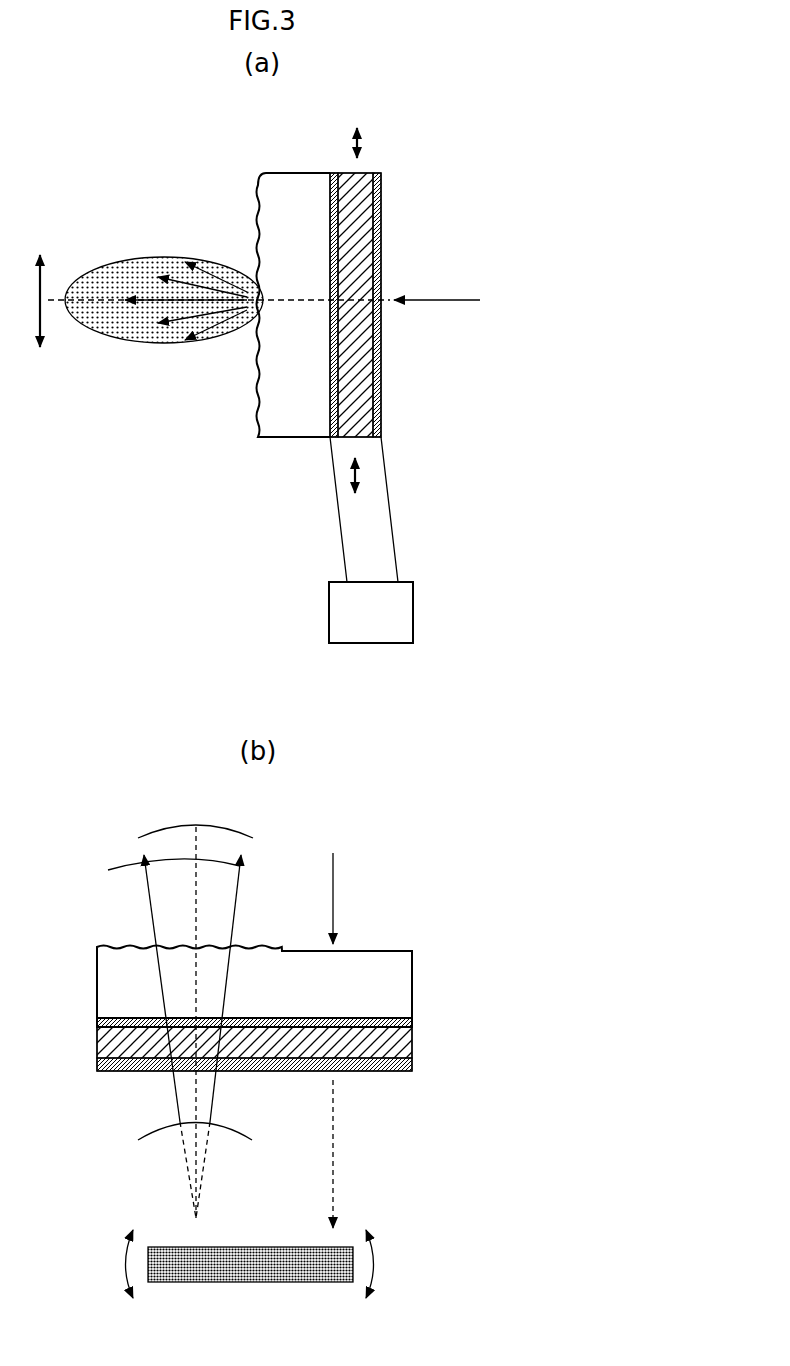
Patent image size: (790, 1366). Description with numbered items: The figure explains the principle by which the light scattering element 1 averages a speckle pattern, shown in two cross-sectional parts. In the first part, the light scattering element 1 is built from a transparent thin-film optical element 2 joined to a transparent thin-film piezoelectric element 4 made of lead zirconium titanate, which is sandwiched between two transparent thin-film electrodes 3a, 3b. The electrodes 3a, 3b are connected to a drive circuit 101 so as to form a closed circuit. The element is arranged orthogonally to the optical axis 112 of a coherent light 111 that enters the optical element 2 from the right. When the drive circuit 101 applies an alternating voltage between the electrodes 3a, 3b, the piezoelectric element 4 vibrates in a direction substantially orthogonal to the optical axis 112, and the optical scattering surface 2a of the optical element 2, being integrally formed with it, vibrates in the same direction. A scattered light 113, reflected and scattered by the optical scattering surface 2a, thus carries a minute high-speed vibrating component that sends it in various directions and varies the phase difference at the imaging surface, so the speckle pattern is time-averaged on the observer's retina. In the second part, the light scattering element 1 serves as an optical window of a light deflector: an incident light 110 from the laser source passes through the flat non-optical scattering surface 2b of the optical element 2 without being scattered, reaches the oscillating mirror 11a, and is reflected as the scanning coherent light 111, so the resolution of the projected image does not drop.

The light scattering element 1 is at (398, 97).
The optical element 2 is at (284, 183).
The optical scattering surface 2a is at (258, 195).
The non-optical scattering surface 2b is at (380, 948).
The electrode 3a is at (327, 440).
The electrode 3b is at (381, 407).
The piezoelectric element 4 is at (345, 173).
The drive circuit 101 is at (413, 612).
The incident light 110 is at (334, 865).
The coherent light 111 is at (423, 298).
The optical axis 112 is at (65, 302).
The scattered light 113 is at (115, 270).
The oscillating mirror 11a is at (266, 1247).